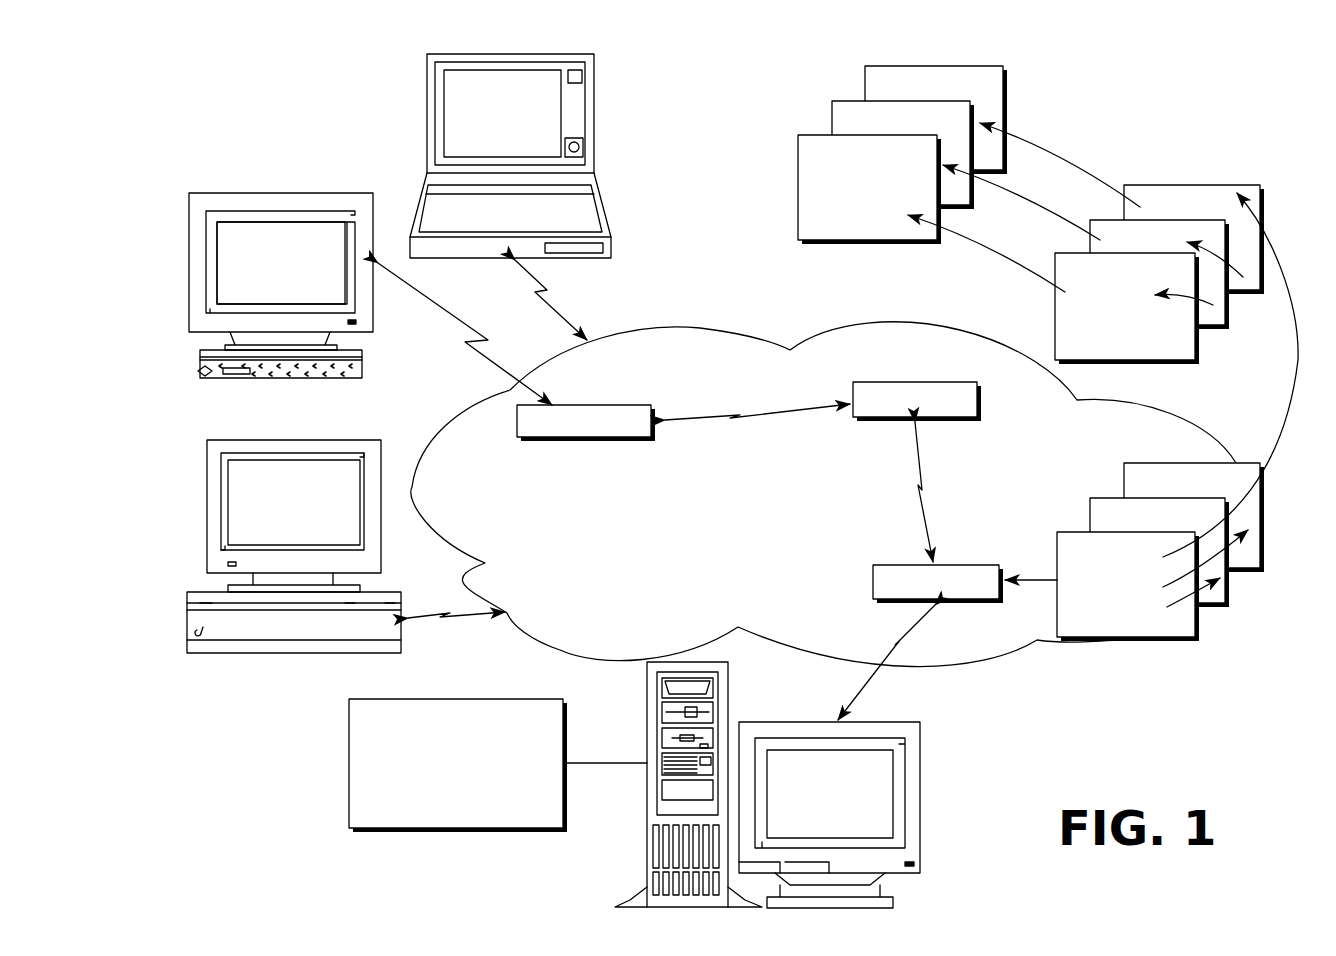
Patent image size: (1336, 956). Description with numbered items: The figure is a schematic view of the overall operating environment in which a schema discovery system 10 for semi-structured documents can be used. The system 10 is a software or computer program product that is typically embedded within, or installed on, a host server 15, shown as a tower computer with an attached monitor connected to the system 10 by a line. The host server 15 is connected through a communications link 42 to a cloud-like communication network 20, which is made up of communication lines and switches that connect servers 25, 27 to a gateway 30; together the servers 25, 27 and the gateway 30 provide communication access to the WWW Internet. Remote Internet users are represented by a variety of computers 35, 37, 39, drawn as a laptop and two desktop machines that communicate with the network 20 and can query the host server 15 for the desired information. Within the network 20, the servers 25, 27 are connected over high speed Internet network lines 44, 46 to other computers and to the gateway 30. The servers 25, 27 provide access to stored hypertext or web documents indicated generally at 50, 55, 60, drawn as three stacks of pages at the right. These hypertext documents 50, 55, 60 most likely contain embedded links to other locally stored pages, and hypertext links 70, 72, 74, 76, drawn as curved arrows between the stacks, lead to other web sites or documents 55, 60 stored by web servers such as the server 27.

The schema discovery system 10 is at (349, 740).
The host server 15 is at (647, 700).
The communication network 20 is at (705, 325).
The server 25 is at (915, 565).
The server 27 is at (930, 382).
The gateway 30 is at (585, 438).
The computer 35 is at (603, 205).
The computer 37 is at (345, 193).
The computer 39 is at (345, 440).
The communication link 42 is at (850, 700).
The high speed Internet network line 44 is at (932, 508).
The high speed Internet network line 46 is at (745, 408).
The hypertext documents 50 is at (1268, 535).
The hypertext documents 55 is at (1275, 208).
The hypertext documents 60 is at (818, 120).
The hypertext link 70 is at (1300, 380).
The hypertext link 72 is at (1080, 166).
The hypertext link 74 is at (1040, 206).
The hypertext link 76 is at (992, 249).